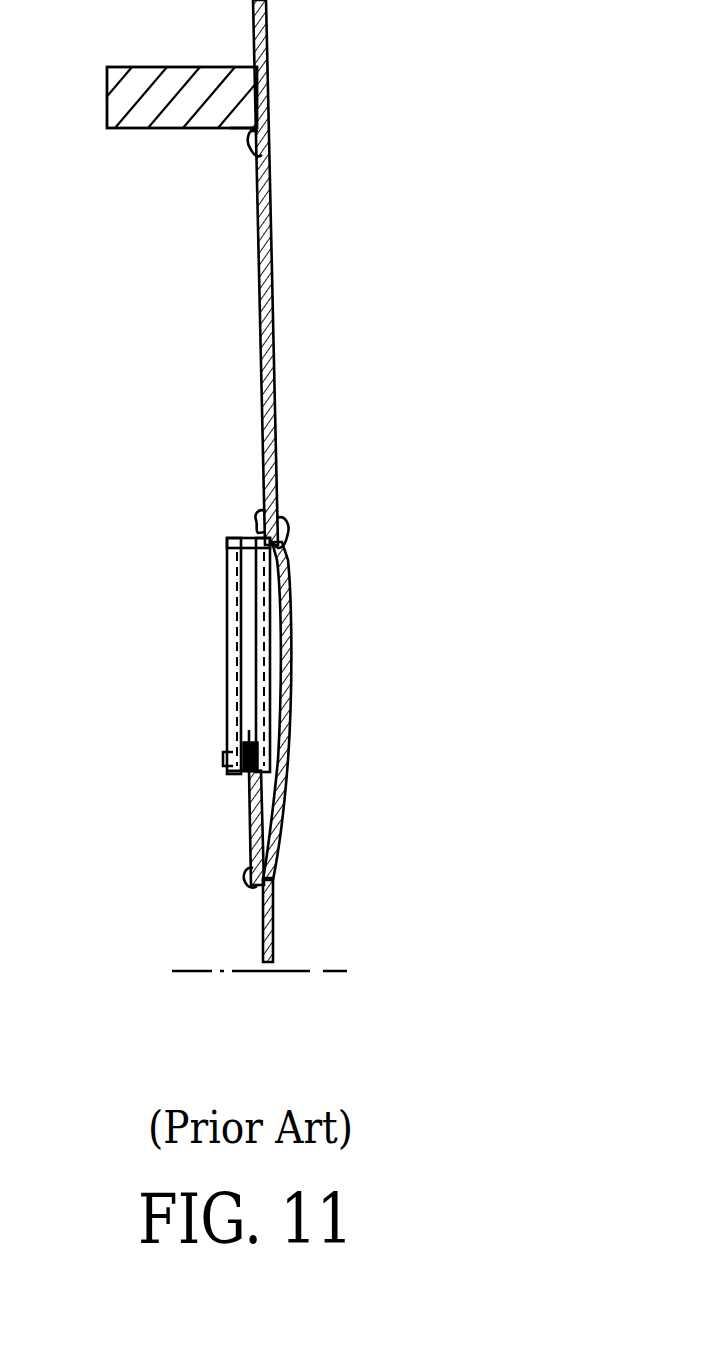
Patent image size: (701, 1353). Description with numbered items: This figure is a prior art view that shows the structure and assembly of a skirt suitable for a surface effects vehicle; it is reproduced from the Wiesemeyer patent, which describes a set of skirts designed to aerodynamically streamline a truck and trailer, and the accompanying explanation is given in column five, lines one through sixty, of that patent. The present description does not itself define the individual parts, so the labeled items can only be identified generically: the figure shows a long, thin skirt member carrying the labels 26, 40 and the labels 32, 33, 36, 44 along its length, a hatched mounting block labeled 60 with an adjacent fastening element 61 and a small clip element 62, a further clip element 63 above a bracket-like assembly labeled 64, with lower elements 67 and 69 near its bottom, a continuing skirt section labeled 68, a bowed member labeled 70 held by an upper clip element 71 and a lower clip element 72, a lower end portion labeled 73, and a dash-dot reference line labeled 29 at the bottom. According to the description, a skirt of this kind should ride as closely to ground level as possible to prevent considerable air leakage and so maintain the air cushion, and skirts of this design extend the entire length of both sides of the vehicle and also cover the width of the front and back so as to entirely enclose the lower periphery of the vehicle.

The webbing 26 is at (385, 272).
The belt portion 40 is at (385, 272).
The belt section 32 is at (385, 272).
The belt section 33 is at (385, 272).
The belt section 36 is at (385, 272).
The belt section 44 is at (276, 268).
The anchor block 60 is at (158, 67).
The fastener 61 is at (256, 128).
The upper clip 62 is at (270, 140).
The clip 63 is at (259, 508).
The housing frame 64 is at (256, 612).
The lower clip 67 is at (224, 756).
The lower webbing section 68 is at (250, 808).
The pin 69 is at (240, 740).
The bowed plate 70 is at (305, 578).
The upper retaining clip 71 is at (282, 540).
The lower retaining clip 72 is at (268, 875).
The webbing end 73 is at (268, 915).
The center line 29 is at (272, 973).